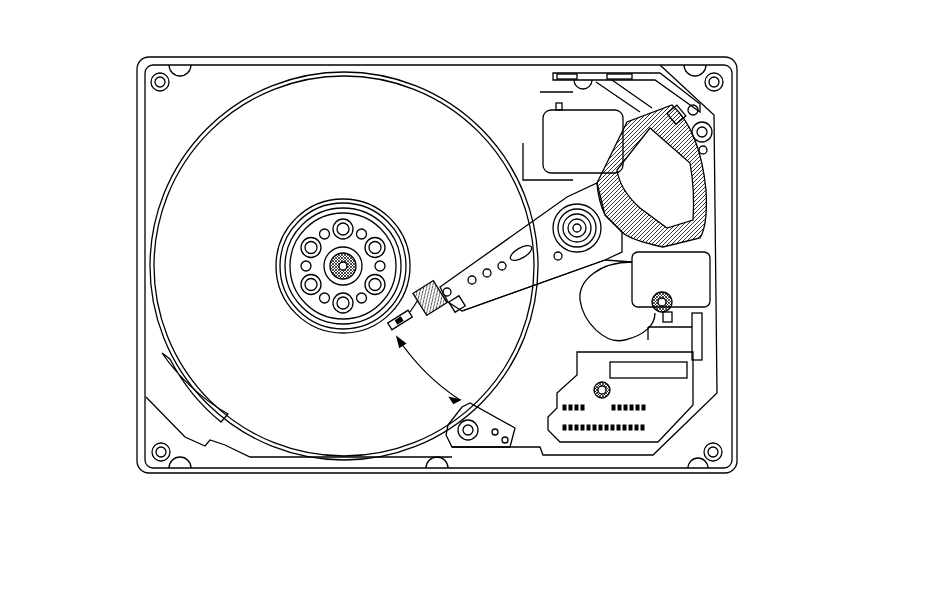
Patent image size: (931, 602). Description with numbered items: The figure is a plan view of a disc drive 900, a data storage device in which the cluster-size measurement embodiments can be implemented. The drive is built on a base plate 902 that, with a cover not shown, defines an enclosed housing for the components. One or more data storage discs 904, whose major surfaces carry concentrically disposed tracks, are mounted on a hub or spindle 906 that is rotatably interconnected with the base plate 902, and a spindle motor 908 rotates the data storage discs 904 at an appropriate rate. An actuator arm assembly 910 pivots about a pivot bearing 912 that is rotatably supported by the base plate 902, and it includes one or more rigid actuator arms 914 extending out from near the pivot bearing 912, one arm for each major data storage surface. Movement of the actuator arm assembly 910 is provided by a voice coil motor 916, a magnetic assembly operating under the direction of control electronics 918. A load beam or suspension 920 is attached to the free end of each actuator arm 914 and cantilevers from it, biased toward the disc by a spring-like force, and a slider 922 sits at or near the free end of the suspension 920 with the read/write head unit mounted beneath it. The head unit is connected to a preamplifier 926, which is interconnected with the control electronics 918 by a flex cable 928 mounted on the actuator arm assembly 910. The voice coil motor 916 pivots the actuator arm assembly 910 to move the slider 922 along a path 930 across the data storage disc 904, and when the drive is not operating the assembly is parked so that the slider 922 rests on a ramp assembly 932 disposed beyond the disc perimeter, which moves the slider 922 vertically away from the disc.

The disc drive 900 is at (120, 112).
The base plate 902 is at (266, 56).
The data storage disc 904 is at (353, 100).
The spindle 906 is at (363, 200).
The spindle motor 908 is at (331, 253).
The actuator arm assembly 910 is at (508, 238).
The pivot bearing 912 is at (593, 218).
The actuator arm 914 is at (488, 302).
The voice coil motor 916 is at (668, 195).
The control electronics 918 is at (610, 435).
The suspension 920 is at (437, 288).
The slider 922 is at (388, 326).
The preamplifier 926 is at (573, 267).
The flex cable 928 is at (577, 351).
The path 930 is at (423, 370).
The ramp assembly 932 is at (493, 447).